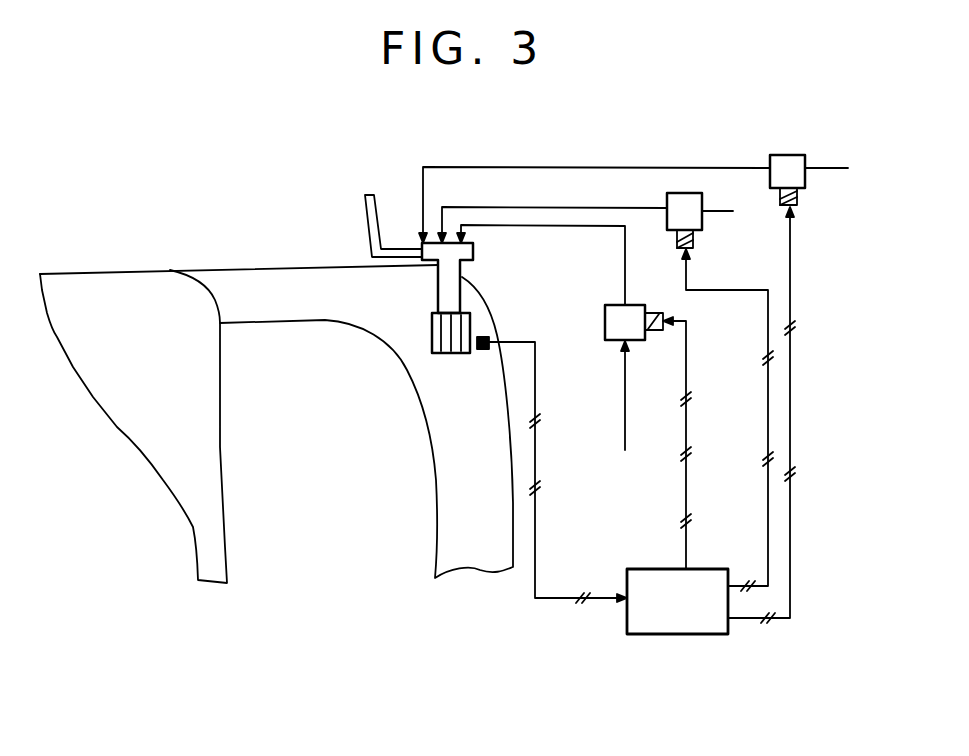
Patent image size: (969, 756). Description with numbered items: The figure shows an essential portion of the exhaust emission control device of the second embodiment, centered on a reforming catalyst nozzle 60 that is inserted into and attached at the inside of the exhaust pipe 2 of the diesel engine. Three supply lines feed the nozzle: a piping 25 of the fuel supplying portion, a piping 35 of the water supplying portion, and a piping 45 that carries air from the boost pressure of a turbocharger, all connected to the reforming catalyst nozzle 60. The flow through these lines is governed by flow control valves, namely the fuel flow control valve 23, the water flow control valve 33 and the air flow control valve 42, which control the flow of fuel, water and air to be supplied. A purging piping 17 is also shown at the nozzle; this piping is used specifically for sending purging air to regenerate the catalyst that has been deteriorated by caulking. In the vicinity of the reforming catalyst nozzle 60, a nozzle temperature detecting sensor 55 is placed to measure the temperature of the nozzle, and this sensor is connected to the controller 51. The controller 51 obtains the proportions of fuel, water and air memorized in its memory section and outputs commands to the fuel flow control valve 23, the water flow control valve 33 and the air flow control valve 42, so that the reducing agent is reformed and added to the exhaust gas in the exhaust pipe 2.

The exhaust pipe 2 is at (233, 267).
The purging piping 17 is at (365, 206).
The fuel flow control valve 23 is at (685, 192).
The piping of the fuel supplying portion 25 is at (585, 207).
The water flow control valve 33 is at (785, 155).
The piping of the water supplying portion 35 is at (524, 167).
The air flow control valve 42 is at (604, 325).
The piping from the boost pressure of a turbocharger 45 is at (557, 227).
The controller 51 is at (640, 620).
The nozzle temperature detecting sensor 55 is at (482, 351).
The reforming catalyst nozzle 60 is at (432, 343).